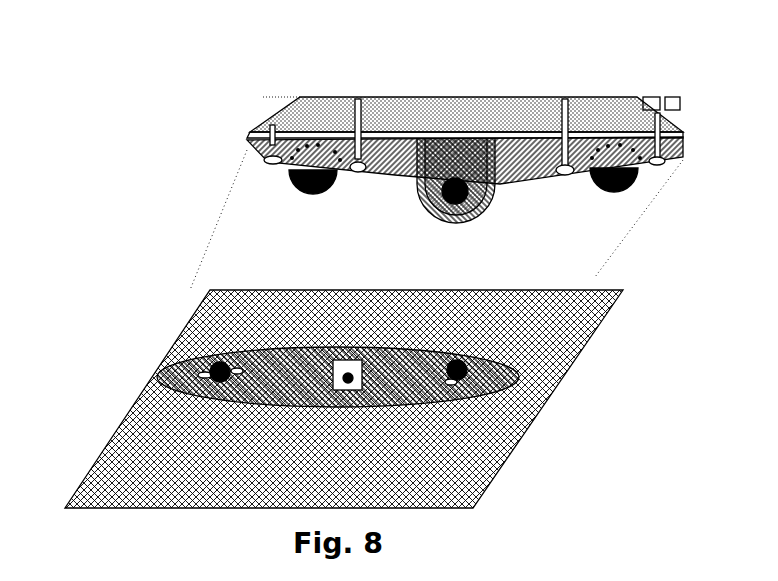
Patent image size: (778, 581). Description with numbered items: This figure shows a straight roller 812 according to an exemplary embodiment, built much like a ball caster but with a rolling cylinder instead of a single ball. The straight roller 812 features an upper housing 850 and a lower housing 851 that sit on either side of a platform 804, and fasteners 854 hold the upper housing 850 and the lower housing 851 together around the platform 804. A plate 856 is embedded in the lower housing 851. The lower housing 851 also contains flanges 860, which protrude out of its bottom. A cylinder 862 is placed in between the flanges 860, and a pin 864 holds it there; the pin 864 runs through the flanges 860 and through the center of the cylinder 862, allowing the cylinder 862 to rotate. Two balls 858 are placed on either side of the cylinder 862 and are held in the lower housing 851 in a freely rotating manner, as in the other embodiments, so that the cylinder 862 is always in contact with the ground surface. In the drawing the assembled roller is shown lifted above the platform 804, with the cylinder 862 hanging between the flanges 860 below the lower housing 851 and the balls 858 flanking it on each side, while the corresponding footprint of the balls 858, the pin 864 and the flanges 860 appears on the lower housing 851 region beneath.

The platform 804 is at (247, 150).
The straight roller 812 is at (247, 141).
The upper housing 850 is at (407, 110).
The lower housing 851 is at (365, 147).
The fasteners 854 is at (372, 160).
The plate 856 is at (537, 155).
The balls 858 is at (298, 187).
The flanges 860 is at (455, 155).
The cylinder 862 is at (490, 205).
The pin 864 is at (443, 198).